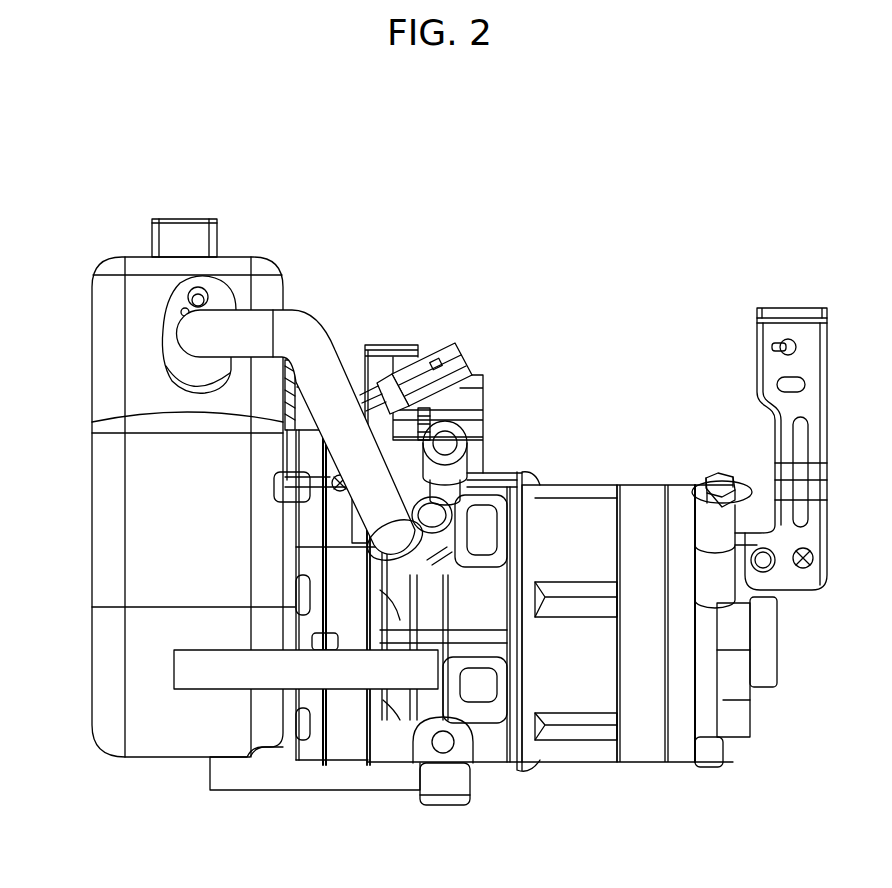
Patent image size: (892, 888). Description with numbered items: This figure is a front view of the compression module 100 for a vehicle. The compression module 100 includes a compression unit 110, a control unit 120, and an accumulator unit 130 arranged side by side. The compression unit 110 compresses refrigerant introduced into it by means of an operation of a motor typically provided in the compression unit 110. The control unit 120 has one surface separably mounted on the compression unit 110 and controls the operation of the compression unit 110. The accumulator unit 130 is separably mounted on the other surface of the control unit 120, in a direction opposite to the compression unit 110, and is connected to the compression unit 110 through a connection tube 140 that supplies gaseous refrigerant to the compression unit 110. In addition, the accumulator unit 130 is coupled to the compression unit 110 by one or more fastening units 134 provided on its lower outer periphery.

The compression module 100 is at (435, 516).
The compression unit 110 is at (782, 815).
The control unit 120 is at (365, 815).
The accumulator unit 130 is at (267, 815).
The fastening unit 134 is at (240, 720).
The connection tube 140 is at (303, 401).